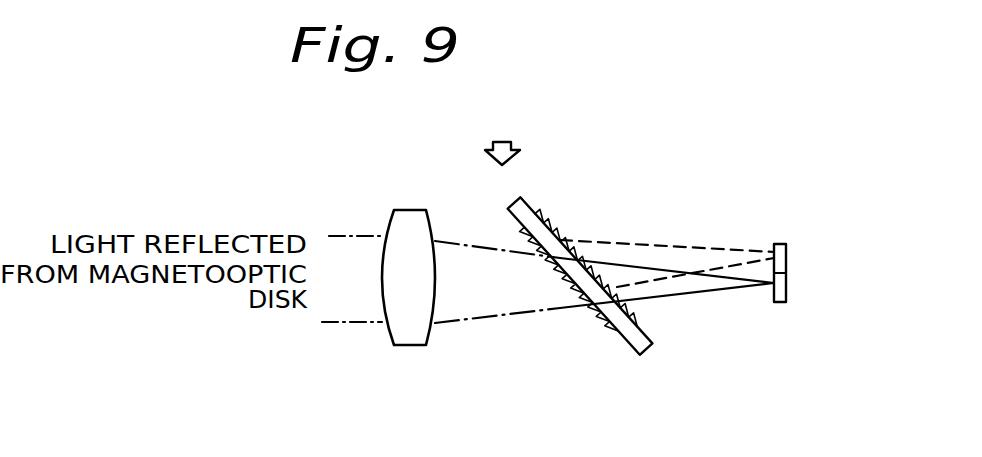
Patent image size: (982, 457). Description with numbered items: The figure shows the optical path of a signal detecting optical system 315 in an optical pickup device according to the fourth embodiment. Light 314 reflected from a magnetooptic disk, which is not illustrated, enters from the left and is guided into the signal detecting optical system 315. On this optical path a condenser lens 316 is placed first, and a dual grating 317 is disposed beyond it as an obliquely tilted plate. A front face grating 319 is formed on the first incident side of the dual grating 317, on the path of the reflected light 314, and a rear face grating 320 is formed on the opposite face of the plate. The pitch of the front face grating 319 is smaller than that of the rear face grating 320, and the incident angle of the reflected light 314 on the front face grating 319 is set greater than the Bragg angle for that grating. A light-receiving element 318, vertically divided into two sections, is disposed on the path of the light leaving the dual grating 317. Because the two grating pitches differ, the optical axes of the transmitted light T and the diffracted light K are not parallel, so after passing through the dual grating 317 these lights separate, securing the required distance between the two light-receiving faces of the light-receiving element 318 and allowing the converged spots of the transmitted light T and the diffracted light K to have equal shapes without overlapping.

The reflected light 314 is at (331, 236).
The signal detecting optical system 315 is at (504, 138).
The condenser lens 316 is at (410, 222).
The dual grating 317 is at (648, 356).
The light-receiving element 318 is at (788, 283).
The front face grating 319 is at (613, 333).
The rear face grating 320 is at (556, 231).
The diffracted light K is at (701, 247).
The transmitted light T is at (715, 297).